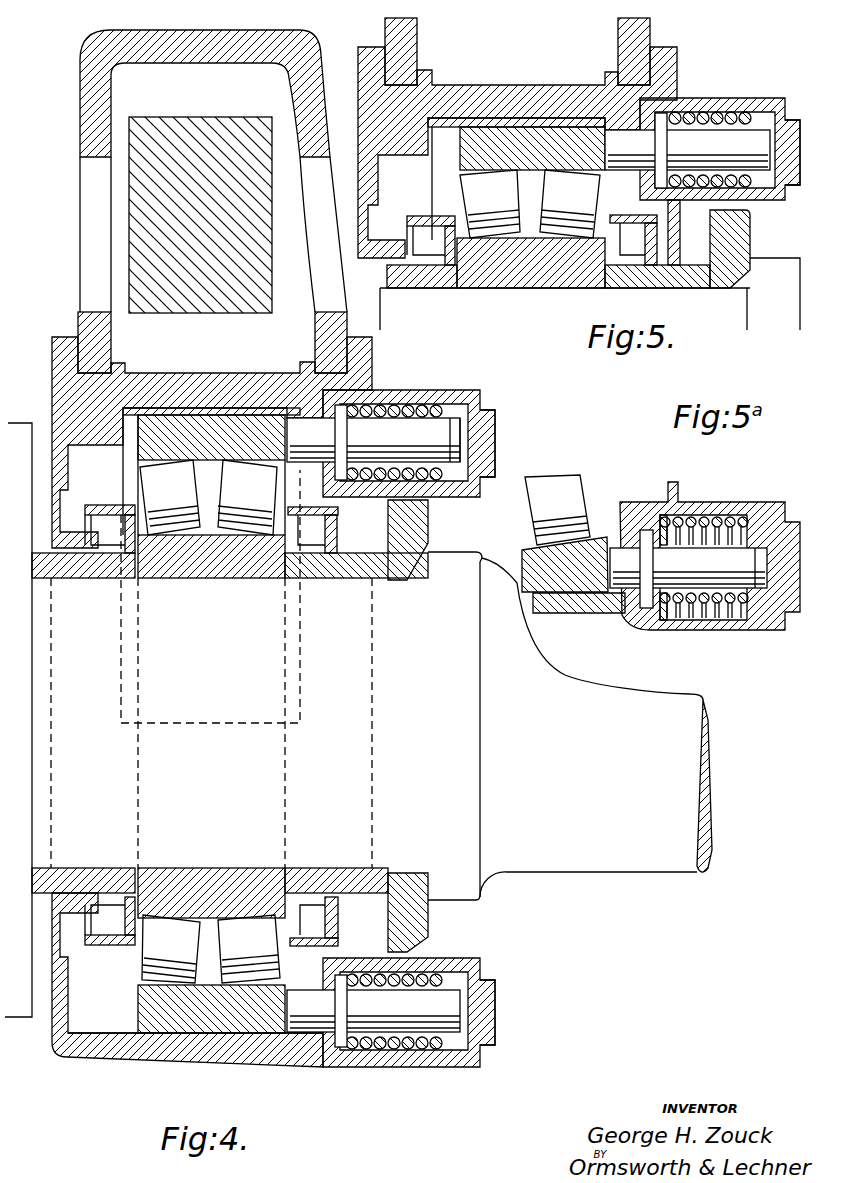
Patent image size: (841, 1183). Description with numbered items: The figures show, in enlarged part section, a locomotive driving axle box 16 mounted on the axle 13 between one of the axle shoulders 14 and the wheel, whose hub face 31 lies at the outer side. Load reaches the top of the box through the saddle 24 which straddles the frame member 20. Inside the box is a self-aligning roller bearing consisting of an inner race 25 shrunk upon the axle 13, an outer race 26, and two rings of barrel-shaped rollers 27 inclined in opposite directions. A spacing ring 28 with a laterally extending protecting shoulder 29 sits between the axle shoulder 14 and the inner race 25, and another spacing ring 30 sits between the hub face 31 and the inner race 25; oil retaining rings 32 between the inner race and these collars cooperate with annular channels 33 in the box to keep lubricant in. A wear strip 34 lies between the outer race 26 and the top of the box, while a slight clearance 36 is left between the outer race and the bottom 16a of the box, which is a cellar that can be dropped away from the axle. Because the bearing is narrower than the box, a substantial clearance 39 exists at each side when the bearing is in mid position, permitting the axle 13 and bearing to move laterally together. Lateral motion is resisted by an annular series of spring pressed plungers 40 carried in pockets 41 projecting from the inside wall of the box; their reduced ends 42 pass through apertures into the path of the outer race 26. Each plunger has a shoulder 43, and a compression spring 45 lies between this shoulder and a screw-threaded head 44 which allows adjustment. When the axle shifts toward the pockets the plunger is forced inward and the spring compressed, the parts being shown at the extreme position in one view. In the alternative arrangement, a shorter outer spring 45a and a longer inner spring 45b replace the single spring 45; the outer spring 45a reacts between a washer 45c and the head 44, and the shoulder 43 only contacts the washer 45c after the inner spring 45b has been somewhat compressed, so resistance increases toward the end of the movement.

In FIG. 4, the axle 13 is at (683, 752).
In FIG. 4, the shoulder 14 is at (455, 790).
In FIG. 5, the shoulder 14 is at (775, 268).
In FIG. 5, the axle box 16 is at (557, 87).
In FIG. 4, the bottom of the box 16a is at (203, 1050).
In FIG. 4, the frame member 20 is at (193, 125).
In FIG. 4, the saddle 24 is at (85, 109).
In FIG. 5, the saddle 24 is at (400, 45).
In FIG. 4, the inner race 25 is at (152, 575).
In FIG. 5, the inner race 25 is at (546, 288).
In FIG. 4, the outer race 26 is at (203, 428).
In FIG. 5, the outer race 26 is at (470, 155).
In FIG. 5A, the outer race 26 is at (577, 577).
In FIG. 4, the barrel-shaped rollers 27 is at (233, 532).
In FIG. 5, the barrel-shaped rollers 27 is at (503, 240).
In FIG. 5A, the barrel-shaped rollers 27 is at (563, 493).
In FIG. 4, the spacing ring 28 is at (350, 580).
In FIG. 5, the spacing ring 28 is at (683, 288).
In FIG. 4, the protecting shoulder 29 is at (412, 532).
In FIG. 5, the protecting shoulder 29 is at (730, 249).
In FIG. 4, the spacing ring 30 is at (83, 580).
In FIG. 5, the spacing ring 30 is at (430, 288).
In FIG. 4, the hub face 31 is at (32, 700).
In FIG. 4, the oil retaining ring 32 is at (100, 505).
In FIG. 5, the oil retaining ring 32 is at (433, 226).
In FIG. 4, the annular channel 33 is at (80, 883).
In FIG. 4, the wear strip 34 is at (150, 408).
In FIG. 5, the wear strip 34 is at (503, 118).
In FIG. 4, the clearance 36 is at (158, 1037).
In FIG. 4, the clearance 39 is at (128, 428).
In FIG. 4, the spring pressed plunger 40 is at (430, 437).
In FIG. 4, the pocket 41 is at (436, 391).
In FIG. 5, the pocket 41 is at (720, 149).
In FIG. 4, the reduced end of plunger 42 is at (310, 428).
In FIG. 5, the reduced end of plunger 42 is at (618, 137).
In FIG. 5A, the reduced end of plunger 42 is at (637, 582).
In FIG. 4, the shoulder 43 is at (341, 403).
In FIG. 5, the shoulder 43 is at (662, 118).
In FIG. 5A, the shoulder 43 is at (647, 530).
In FIG. 4, the head 44 is at (467, 410).
In FIG. 5, the head 44 is at (778, 98).
In FIG. 5A, the head 44 is at (777, 513).
In FIG. 4, the compression spring 45 is at (397, 406).
In FIG. 5, the compression spring 45 is at (742, 118).
In FIG. 5A, the outer spring 45a is at (717, 615).
In FIG. 5A, the inner spring 45b is at (688, 520).
In FIG. 5A, the washer 45c is at (667, 615).